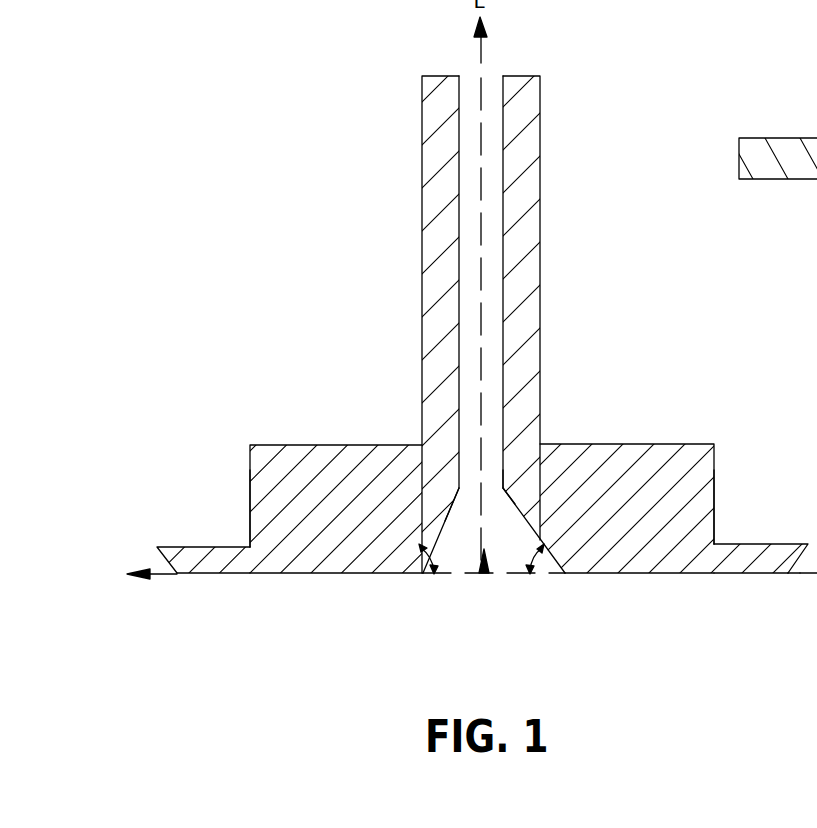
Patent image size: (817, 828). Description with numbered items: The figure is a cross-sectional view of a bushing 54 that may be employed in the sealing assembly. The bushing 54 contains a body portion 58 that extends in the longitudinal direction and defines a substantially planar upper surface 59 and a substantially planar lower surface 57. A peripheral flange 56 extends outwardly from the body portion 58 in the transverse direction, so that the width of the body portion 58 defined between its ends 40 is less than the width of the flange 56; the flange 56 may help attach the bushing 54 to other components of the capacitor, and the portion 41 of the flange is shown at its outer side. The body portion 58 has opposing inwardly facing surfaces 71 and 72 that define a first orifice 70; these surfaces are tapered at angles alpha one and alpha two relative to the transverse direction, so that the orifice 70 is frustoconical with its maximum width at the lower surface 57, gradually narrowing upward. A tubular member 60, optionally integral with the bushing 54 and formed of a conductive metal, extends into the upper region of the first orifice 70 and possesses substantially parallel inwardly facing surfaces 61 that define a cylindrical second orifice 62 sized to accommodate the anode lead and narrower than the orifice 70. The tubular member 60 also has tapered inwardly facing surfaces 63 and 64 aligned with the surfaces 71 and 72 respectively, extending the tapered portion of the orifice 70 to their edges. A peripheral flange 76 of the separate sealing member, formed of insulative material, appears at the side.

The ends 40 is at (250, 475).
The flange 41 is at (212, 547).
The bushing 54 is at (270, 618).
The peripheral flange 56 is at (203, 563).
The lower surface 57 is at (657, 574).
The body portion 58 is at (625, 460).
The upper surface 59 is at (318, 445).
The tubular member 60 is at (520, 267).
The inwardly facing surfaces 61 is at (505, 245).
The second orifice 62 is at (491, 79).
The inwardly facing surface 63 is at (454, 498).
The inwardly facing surface 64 is at (517, 512).
The first orifice 70 is at (484, 573).
The inwardly facing surface 71 is at (413, 573).
The inwardly facing surface 72 is at (556, 561).
The peripheral flange 76 is at (768, 138).